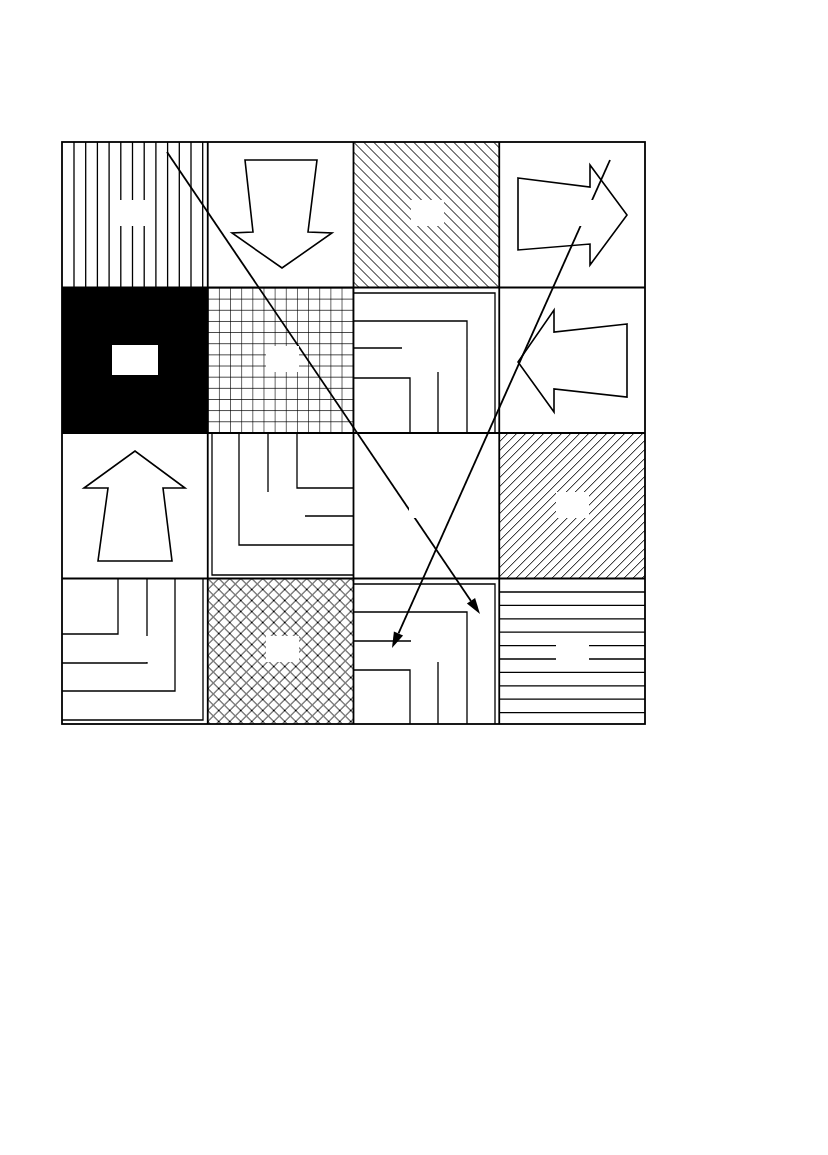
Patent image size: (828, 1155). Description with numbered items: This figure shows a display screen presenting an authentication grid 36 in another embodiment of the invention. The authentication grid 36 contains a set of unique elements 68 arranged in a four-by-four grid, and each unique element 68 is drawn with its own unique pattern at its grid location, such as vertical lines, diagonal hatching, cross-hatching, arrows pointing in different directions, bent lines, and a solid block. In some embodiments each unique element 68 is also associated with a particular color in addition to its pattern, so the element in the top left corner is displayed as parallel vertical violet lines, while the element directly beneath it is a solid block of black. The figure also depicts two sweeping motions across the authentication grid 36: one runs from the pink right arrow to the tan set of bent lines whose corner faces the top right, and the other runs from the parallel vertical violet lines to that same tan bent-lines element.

The authentication grid 36 is at (646, 142).
The unique elements 68 is at (115, 106).